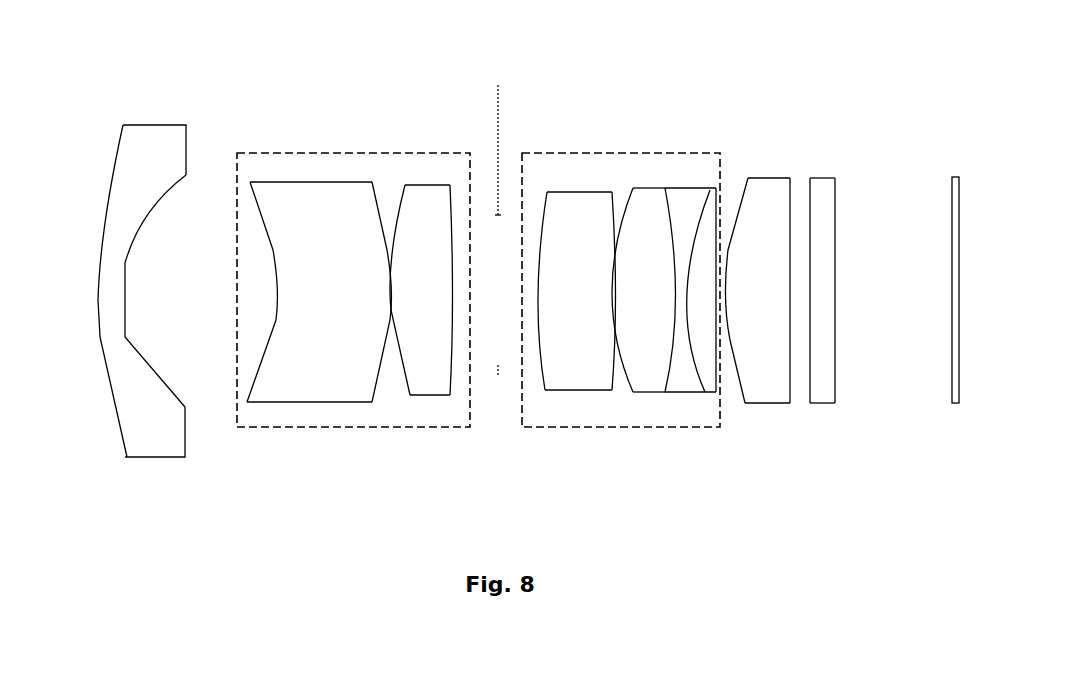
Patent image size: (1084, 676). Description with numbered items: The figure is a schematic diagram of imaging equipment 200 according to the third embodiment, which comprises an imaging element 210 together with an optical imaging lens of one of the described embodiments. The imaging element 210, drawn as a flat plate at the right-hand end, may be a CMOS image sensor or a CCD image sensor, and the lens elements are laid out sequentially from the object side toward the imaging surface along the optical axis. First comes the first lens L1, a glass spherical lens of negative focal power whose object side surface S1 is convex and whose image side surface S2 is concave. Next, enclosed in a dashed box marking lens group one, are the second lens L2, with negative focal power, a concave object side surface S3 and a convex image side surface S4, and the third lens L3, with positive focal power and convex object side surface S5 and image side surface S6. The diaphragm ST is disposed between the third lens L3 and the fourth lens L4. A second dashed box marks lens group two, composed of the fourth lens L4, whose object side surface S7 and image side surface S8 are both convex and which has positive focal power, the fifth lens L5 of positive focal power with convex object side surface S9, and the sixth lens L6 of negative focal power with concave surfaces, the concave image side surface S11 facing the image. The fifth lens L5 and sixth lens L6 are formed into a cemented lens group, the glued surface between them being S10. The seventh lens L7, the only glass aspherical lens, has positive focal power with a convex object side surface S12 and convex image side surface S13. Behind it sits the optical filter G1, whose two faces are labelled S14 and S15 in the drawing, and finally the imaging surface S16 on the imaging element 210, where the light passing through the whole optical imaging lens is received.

The imaging equipment 200 is at (80, 60).
The imaging element 210 is at (953, 175).
The first lens L1 is at (157, 122).
The second lens L2 is at (318, 180).
The third lens L3 is at (430, 185).
The fourth lens L4 is at (581, 192).
The fifth lens L5 is at (651, 188).
The sixth lens L6 is at (690, 188).
The seventh lens L7 is at (770, 178).
The diaphragm ST is at (487, 219).
The optical filter G1 is at (825, 178).
The object side surface of the first lens S1 is at (100, 293).
The image side surface of the first lens S2 is at (125, 305).
The object side surface of the second lens S3 is at (278, 300).
The image side surface of the second lens S4 is at (393, 300).
The object side surface of the third lens S5 is at (391, 300).
The image side surface of the third lens S6 is at (452, 307).
The object side surface of the fourth lens S7 is at (536, 300).
The image side surface of the fourth lens S8 is at (615, 303).
The object side surface of the fifth lens S9 is at (613, 303).
The glued surface S10 is at (675, 305).
The image side surface of the sixth lens S11 is at (689, 307).
The object side surface of the seventh lens S12 is at (727, 307).
The image side surface of the seventh lens S13 is at (790, 307).
The object-side surface of glass filter S14 is at (810, 198).
The image-side surface of glass filter S15 is at (835, 198).
The imaging surface of image sensor S16 is at (952, 300).